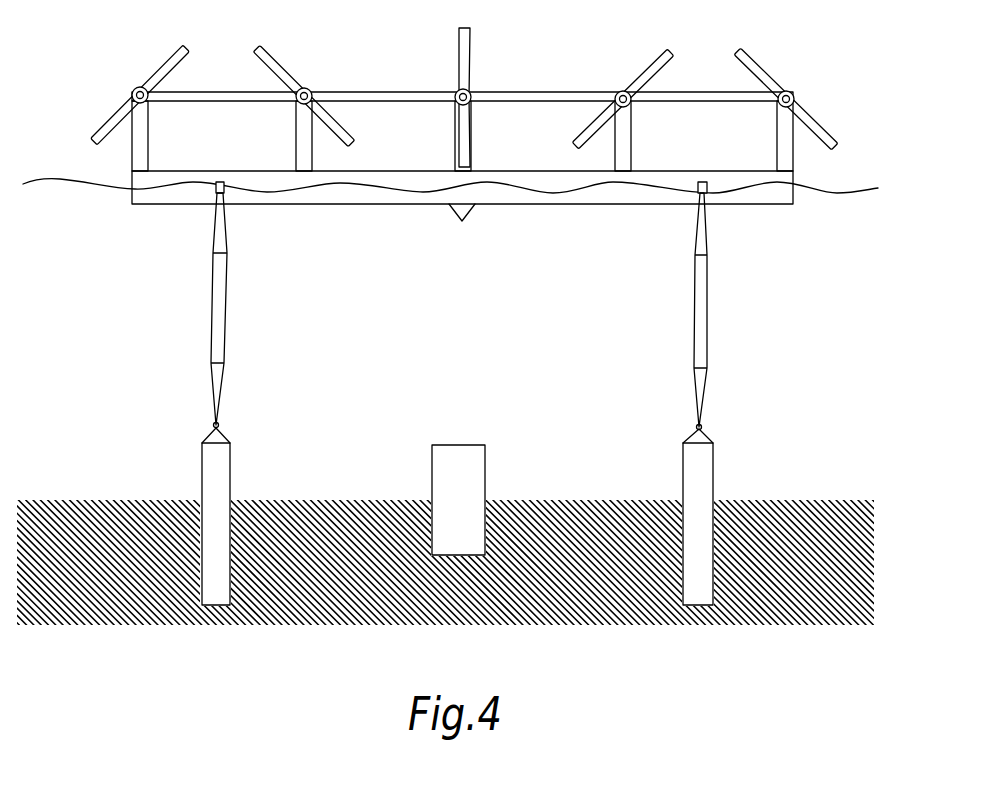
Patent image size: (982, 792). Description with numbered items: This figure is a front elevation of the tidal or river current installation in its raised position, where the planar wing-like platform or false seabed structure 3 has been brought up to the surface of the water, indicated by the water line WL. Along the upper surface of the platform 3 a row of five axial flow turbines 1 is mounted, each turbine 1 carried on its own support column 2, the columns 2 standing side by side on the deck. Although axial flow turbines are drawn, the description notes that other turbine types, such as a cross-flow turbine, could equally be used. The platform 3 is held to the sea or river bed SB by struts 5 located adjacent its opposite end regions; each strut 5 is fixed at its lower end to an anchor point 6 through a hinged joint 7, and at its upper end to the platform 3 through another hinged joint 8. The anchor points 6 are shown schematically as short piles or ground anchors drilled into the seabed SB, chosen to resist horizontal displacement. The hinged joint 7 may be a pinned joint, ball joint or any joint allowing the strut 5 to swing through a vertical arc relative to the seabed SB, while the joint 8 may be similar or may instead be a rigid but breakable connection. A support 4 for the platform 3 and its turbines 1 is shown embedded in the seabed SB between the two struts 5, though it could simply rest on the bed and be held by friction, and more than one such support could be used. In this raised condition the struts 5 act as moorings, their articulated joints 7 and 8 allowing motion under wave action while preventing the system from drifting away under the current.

The axial flow turbine 1 is at (152, 72).
The support column 2 is at (147, 137).
The planar wing-like platform or false seabed structure 3 is at (777, 197).
The support 4 is at (470, 470).
The strut 5 is at (218, 307).
The anchor point 6 is at (218, 467).
The hinged joint 7 is at (213, 425).
The hinged joint 8 is at (217, 196).
The water line WL is at (45, 182).
The seabed SB is at (97, 520).